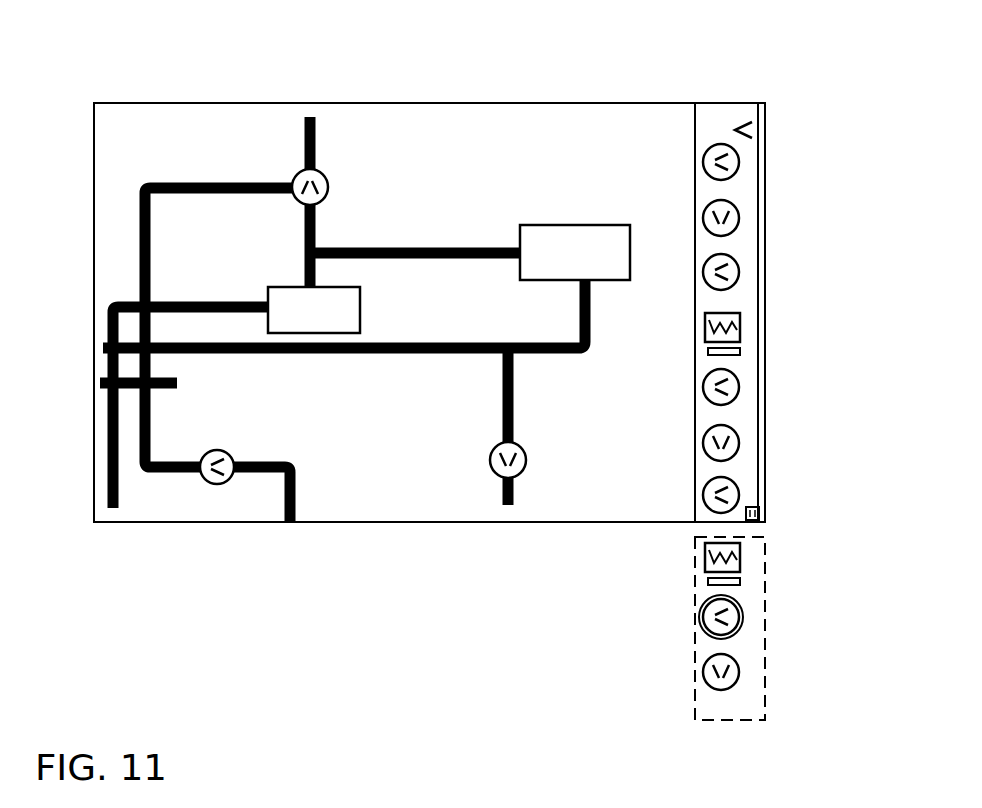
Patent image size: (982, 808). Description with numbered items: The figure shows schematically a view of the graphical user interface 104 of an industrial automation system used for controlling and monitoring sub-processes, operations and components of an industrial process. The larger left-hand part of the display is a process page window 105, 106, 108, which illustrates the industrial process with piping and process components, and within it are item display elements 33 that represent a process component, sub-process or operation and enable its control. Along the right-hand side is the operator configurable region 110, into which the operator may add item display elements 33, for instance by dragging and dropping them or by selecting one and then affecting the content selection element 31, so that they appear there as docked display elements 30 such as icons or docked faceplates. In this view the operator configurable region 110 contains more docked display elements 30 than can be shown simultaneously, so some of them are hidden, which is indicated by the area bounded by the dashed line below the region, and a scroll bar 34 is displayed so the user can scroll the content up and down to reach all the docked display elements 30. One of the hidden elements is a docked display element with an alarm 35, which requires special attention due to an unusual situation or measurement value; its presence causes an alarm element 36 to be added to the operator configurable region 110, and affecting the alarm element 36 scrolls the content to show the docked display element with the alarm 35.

The graphical user interface 104 is at (438, 264).
The main process page window 105 is at (406, 294).
The first auxiliary process page window 106 is at (406, 294).
The second auxiliary process page window 108 is at (262, 117).
The content selection element 31 is at (748, 130).
The scroll bar 34 is at (760, 170).
The docked display element 30 is at (735, 207).
The operator configurable region 110 is at (728, 473).
The alarm element 36 is at (762, 510).
The docked display element with an alarm 35 is at (742, 610).
The item display element 33 is at (223, 480).